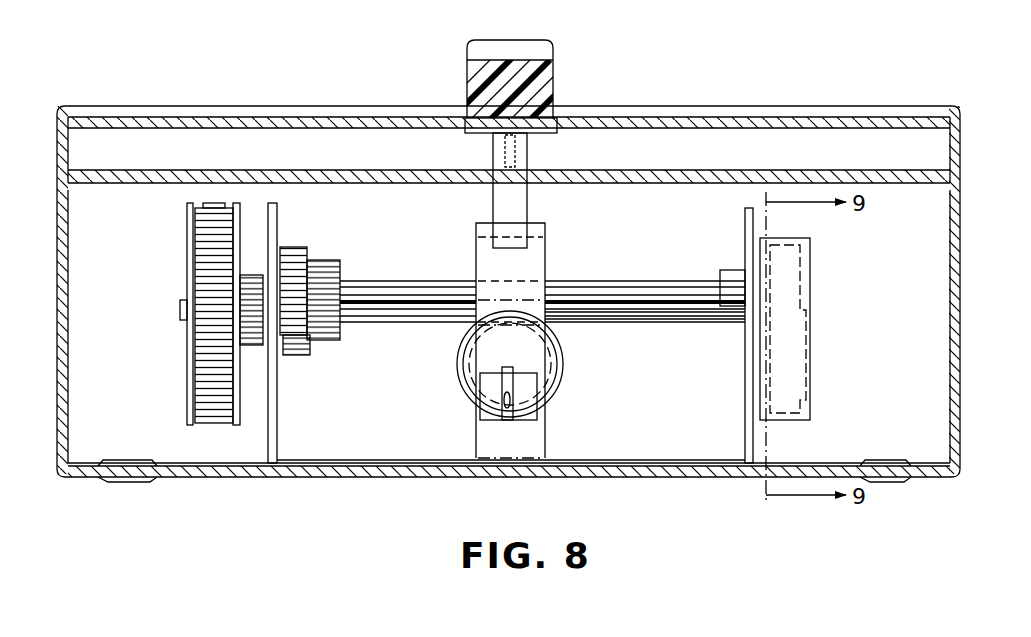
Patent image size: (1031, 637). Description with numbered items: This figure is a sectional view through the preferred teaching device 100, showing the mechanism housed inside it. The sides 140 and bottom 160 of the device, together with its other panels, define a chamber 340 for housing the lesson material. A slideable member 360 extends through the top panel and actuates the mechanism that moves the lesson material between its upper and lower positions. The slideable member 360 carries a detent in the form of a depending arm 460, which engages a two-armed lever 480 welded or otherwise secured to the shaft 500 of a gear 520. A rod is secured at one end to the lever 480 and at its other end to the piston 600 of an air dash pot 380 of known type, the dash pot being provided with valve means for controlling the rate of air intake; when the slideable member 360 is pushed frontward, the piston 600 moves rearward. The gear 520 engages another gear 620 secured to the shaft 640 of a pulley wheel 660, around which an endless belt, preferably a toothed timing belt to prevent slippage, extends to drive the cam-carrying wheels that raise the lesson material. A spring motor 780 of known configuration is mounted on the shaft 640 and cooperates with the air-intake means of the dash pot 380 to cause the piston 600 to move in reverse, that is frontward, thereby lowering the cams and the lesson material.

The teaching device 100 is at (674, 106).
The sides 140 is at (962, 237).
The bottom 160 is at (421, 478).
The chamber 340 is at (745, 385).
The slideable member 360 is at (540, 49).
The air dash pot 380 is at (462, 372).
The depending arm 460 is at (522, 212).
The two-armed lever 480 is at (487, 380).
The shaft 500 is at (387, 285).
The gear 520 is at (296, 250).
The piston 600 is at (210, 336).
The gear 620 is at (298, 356).
The shaft 640 is at (613, 324).
The pulley wheel 660 is at (187, 232).
The spring motor 780 is at (795, 279).